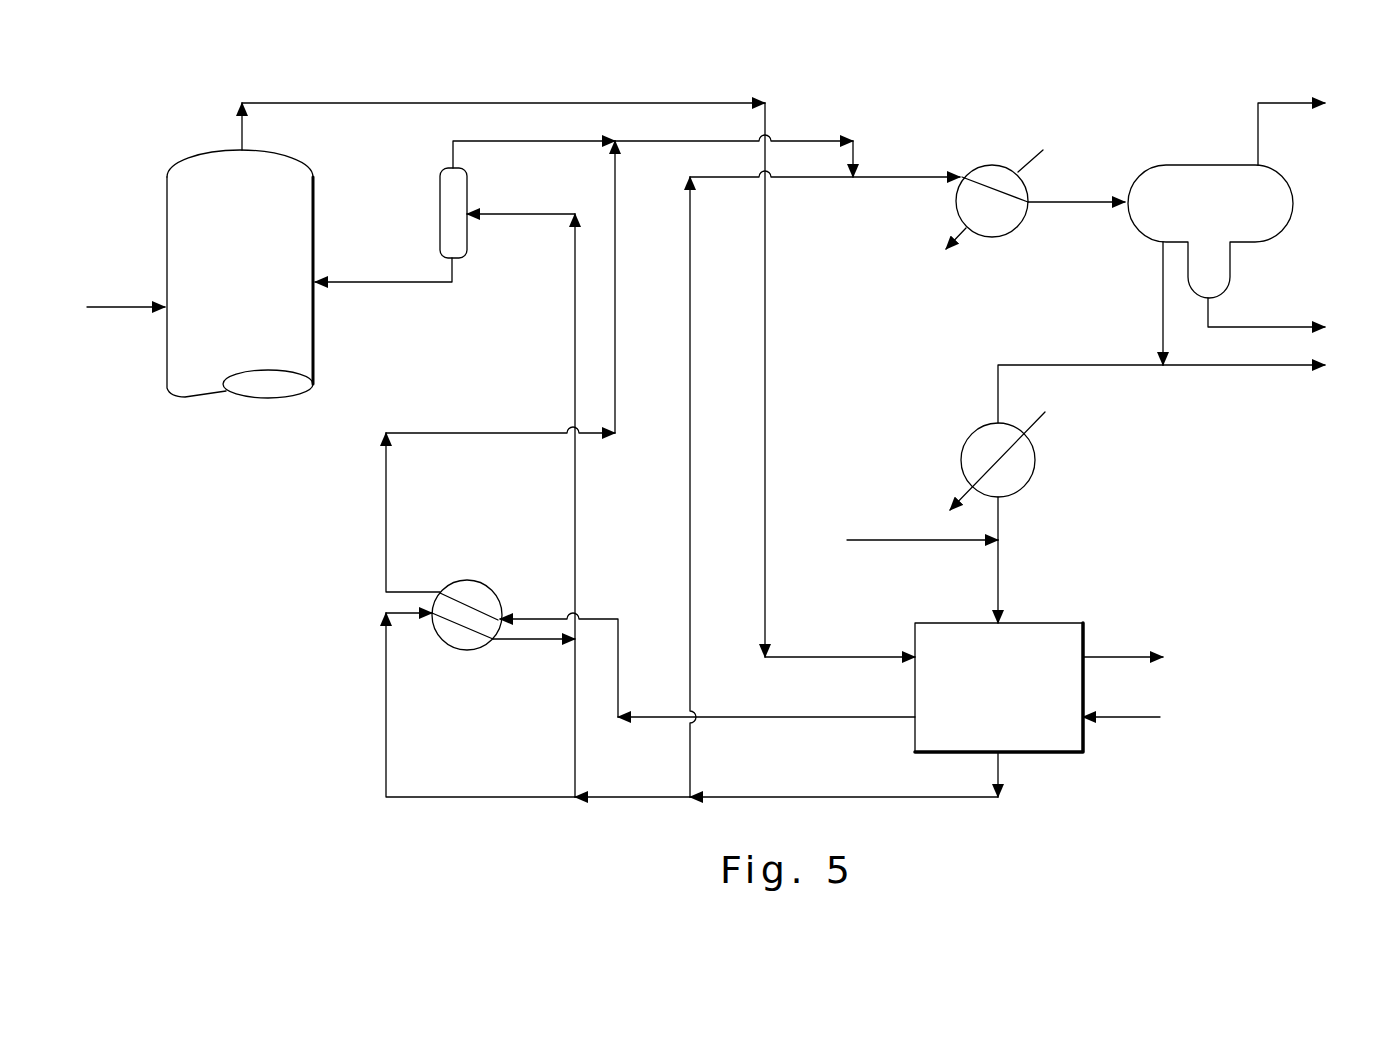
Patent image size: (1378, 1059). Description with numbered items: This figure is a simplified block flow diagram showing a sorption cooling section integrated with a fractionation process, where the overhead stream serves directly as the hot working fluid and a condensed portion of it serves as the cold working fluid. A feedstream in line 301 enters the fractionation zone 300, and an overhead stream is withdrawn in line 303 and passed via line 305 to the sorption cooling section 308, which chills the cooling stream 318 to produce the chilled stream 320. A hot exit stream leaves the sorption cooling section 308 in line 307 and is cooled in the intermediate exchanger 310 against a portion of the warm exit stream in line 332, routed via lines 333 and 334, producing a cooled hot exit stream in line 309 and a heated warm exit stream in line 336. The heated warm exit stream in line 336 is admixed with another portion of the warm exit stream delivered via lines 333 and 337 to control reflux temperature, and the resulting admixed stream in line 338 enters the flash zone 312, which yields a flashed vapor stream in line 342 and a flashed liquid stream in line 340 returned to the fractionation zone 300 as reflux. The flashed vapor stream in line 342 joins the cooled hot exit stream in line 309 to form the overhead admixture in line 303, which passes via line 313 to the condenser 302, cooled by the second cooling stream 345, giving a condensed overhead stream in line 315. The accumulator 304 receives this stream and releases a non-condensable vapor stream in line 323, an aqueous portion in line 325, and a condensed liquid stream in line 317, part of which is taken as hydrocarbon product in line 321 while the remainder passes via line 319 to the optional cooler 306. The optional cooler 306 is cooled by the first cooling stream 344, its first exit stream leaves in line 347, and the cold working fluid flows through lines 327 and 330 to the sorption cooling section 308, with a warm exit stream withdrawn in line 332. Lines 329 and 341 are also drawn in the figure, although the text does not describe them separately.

The fractionation zone 300 is at (266, 258).
The line 301 is at (123, 305).
The condenser 302 is at (993, 165).
The line 303 is at (790, 140).
The accumulator 304 is at (1237, 221).
The line 305 is at (372, 103).
The optional cooler 306 is at (1036, 472).
The line 307 is at (797, 718).
The sorption cooling section 308 is at (1024, 704).
The line 309 is at (451, 434).
The intermediate exchanger 310 is at (448, 647).
The flash zone 312 is at (435, 218).
The line 313 is at (910, 179).
The line 315 is at (1072, 204).
The line 317 is at (1160, 306).
The cooling stream 318 is at (1136, 718).
The line 319 is at (1085, 365).
The chilled stream 320 is at (1130, 656).
The line 321 is at (1256, 366).
The line 323 is at (1290, 103).
The line 325 is at (1256, 327).
The line 327 is at (1000, 518).
The line 329 is at (927, 541).
The line 330 is at (1000, 577).
The line 332 is at (936, 798).
The line 333 is at (630, 798).
The line 334 is at (388, 722).
The line 336 is at (532, 641).
The line 337 is at (577, 728).
The line 338 is at (577, 513).
The line 340 is at (378, 284).
The line 341 is at (690, 474).
The line 342 is at (533, 141).
The first cooling stream 344 is at (1045, 418).
The second cooling stream 345 is at (1045, 148).
The line 347 is at (962, 495).